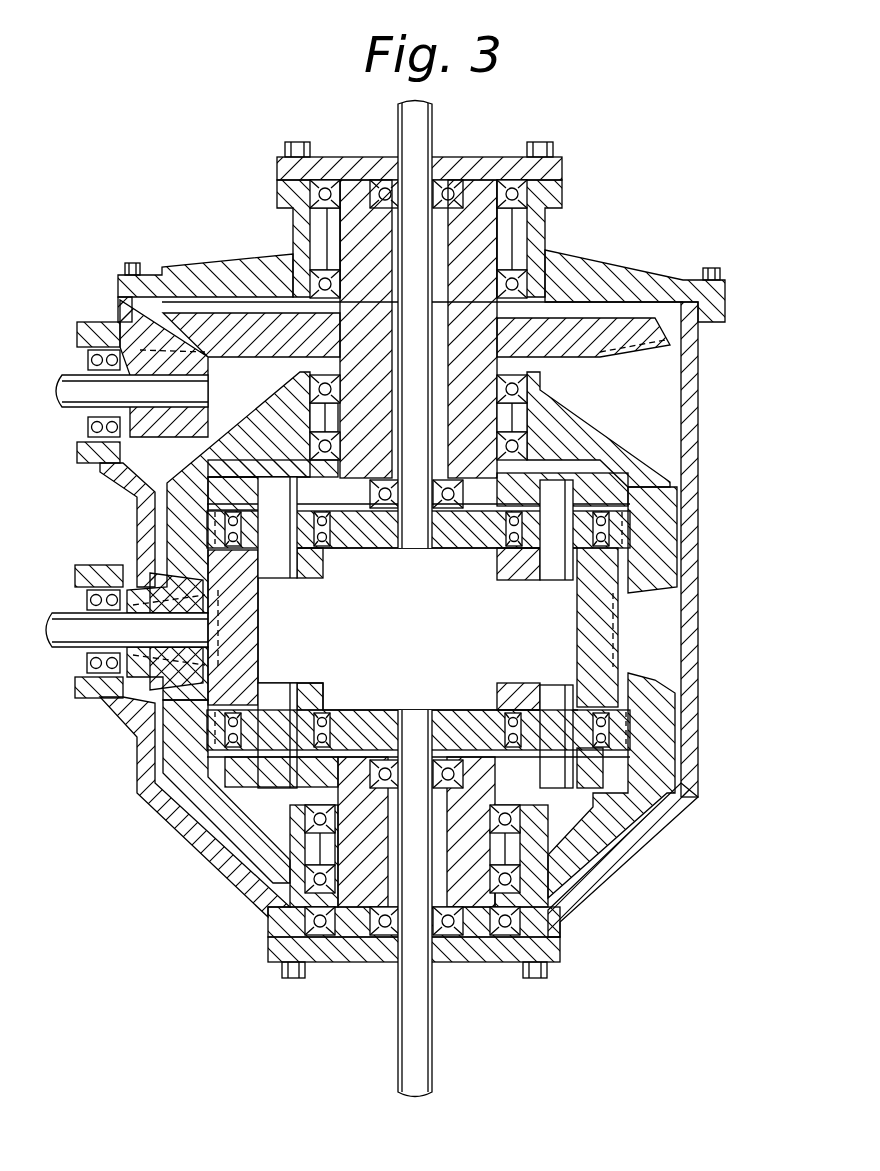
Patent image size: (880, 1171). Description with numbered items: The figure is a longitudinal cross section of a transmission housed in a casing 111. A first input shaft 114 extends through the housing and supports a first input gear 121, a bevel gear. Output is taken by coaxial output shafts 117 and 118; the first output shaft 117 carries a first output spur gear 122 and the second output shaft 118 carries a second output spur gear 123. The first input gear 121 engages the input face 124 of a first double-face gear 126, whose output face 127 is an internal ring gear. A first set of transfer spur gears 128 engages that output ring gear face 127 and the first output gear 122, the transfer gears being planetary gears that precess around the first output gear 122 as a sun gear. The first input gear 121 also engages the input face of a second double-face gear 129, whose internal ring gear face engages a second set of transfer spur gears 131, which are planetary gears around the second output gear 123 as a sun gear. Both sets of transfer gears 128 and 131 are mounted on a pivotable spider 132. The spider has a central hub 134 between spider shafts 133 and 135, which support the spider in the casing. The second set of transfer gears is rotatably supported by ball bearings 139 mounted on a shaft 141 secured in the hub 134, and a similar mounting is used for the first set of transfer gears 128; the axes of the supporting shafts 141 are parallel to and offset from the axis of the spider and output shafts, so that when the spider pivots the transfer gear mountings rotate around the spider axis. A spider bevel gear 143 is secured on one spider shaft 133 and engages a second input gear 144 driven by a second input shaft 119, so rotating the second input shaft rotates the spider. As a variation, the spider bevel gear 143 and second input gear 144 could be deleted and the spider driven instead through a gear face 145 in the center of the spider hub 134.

The casing 111 is at (699, 530).
The first input shaft 114 is at (78, 637).
The first output shaft 117 is at (422, 120).
The second output shaft 118 is at (422, 1063).
The second input shaft 119 is at (80, 398).
The first input gear 121 is at (108, 708).
The first output spur gear 122 is at (470, 540).
The second output spur gear 123 is at (450, 710).
The input face 124 is at (130, 590).
The first double-face gear 126 is at (170, 503).
The output face 127 is at (630, 497).
The first set of transfer spur gears 128 is at (340, 548).
The second double-face gear 129 is at (248, 828).
The second set of transfer spur gears 131 is at (333, 710).
The pivotable spider 132 is at (632, 632).
The spider shaft 133 is at (506, 240).
The central hub 134 is at (258, 628).
The spider shaft 135 is at (473, 912).
The ball bearings 139 is at (300, 720).
The shaft 141 is at (277, 768).
The spider bevel gear 143 is at (207, 330).
The second input gear 144 is at (117, 350).
The gear face 145 is at (615, 622).